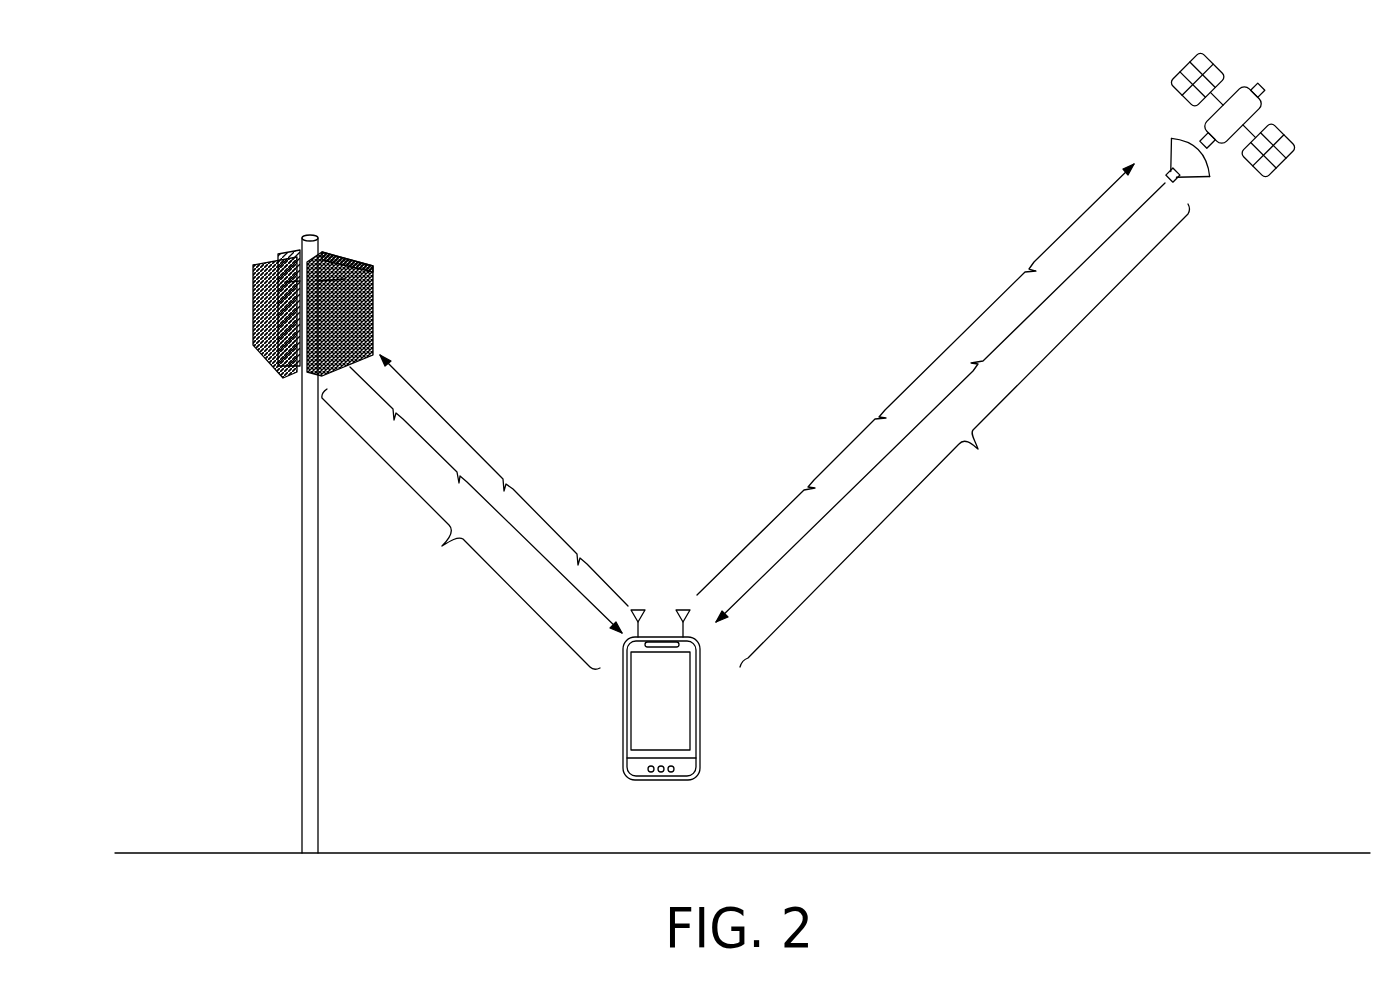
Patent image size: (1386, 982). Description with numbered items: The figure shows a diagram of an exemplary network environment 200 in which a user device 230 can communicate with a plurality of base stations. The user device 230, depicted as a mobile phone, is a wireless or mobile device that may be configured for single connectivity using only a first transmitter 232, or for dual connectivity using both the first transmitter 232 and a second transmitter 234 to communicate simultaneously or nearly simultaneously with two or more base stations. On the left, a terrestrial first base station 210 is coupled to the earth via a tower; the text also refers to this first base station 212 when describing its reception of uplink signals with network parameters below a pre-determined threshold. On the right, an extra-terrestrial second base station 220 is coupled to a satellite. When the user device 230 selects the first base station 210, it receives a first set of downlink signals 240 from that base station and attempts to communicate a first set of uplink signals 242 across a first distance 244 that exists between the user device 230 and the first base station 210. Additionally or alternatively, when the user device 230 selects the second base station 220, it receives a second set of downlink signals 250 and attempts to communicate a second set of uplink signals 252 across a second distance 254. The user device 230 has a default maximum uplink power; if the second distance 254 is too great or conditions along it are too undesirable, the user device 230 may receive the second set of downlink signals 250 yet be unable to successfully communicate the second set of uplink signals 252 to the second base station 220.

The network environment 200 is at (183, 67).
The first base station 210 is at (244, 520).
The first base station 212 is at (374, 283).
The second base station 220 is at (1285, 128).
The user device 230 is at (624, 712).
The first transmitter 232 is at (637, 609).
The second transmitter 234 is at (683, 609).
The first set of downlink signals 240 is at (510, 533).
The first set of uplink signals 242 is at (490, 437).
The first distance 244 is at (442, 546).
The second set of downlink signals 250 is at (842, 497).
The second set of uplink signals 252 is at (947, 348).
The second distance 254 is at (978, 449).